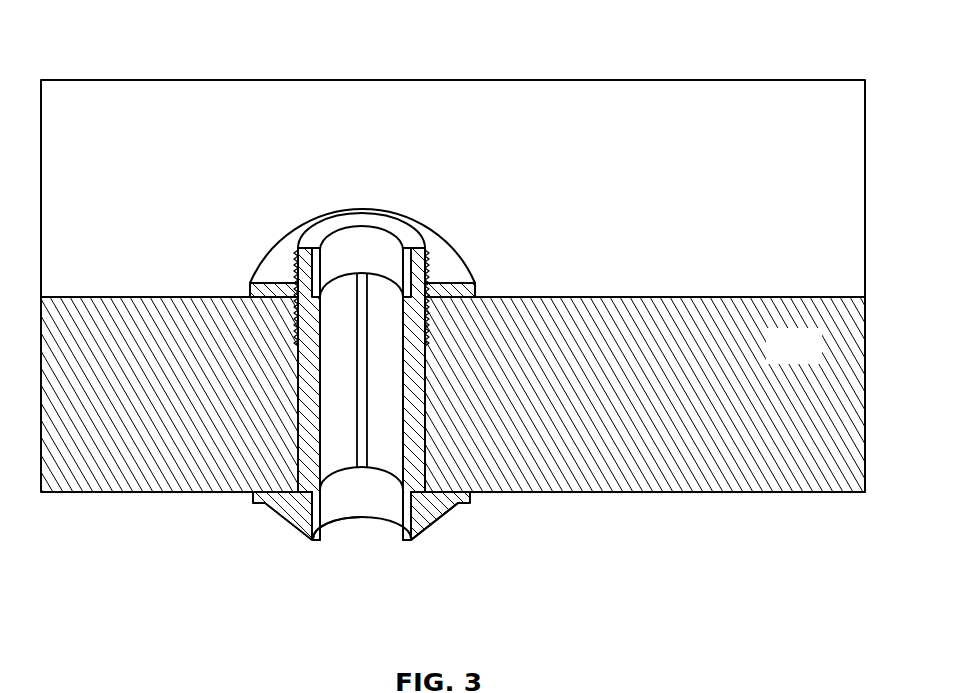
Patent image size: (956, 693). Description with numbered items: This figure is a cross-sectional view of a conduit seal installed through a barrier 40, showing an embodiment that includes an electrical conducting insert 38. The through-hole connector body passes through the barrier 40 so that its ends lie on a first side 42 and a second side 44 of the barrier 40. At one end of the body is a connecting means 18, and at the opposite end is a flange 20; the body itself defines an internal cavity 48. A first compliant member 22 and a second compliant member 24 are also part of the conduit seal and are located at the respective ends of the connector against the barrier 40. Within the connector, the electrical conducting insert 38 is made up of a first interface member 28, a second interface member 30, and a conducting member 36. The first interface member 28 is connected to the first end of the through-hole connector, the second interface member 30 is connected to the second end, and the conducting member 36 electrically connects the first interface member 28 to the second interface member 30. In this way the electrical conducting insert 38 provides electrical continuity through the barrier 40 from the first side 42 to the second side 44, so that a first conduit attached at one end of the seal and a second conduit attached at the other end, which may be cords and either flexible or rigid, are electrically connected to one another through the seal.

The connecting means 18 is at (428, 323).
The flange 20 is at (438, 533).
The first compliant member 22 is at (278, 257).
The second compliant member 24 is at (282, 494).
The first interface member 28 is at (377, 250).
The second interface member 30 is at (362, 497).
The conducting member 36 is at (355, 337).
The electrical conducting insert 38 is at (505, 405).
The barrier 40 is at (812, 357).
The first side 42 is at (810, 161).
The second side 44 is at (812, 544).
The internal cavity 48 is at (335, 542).